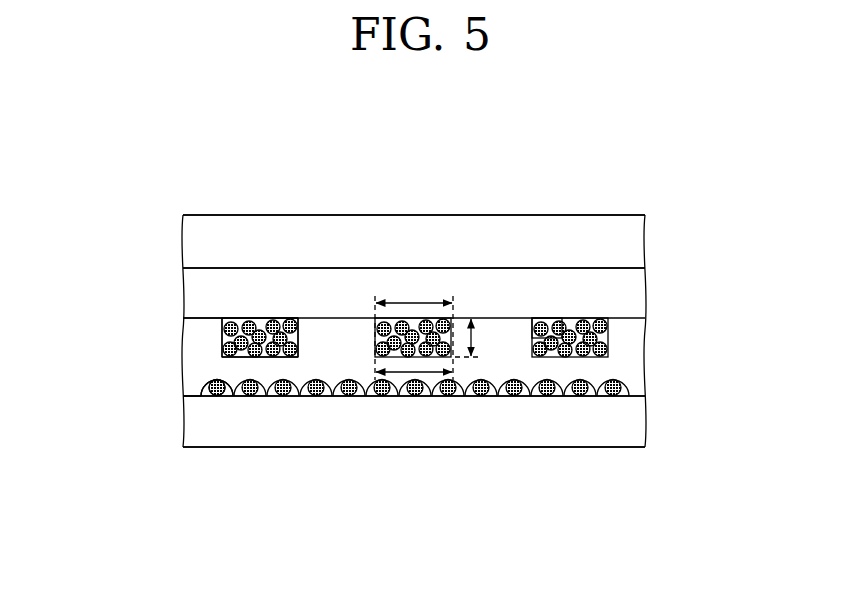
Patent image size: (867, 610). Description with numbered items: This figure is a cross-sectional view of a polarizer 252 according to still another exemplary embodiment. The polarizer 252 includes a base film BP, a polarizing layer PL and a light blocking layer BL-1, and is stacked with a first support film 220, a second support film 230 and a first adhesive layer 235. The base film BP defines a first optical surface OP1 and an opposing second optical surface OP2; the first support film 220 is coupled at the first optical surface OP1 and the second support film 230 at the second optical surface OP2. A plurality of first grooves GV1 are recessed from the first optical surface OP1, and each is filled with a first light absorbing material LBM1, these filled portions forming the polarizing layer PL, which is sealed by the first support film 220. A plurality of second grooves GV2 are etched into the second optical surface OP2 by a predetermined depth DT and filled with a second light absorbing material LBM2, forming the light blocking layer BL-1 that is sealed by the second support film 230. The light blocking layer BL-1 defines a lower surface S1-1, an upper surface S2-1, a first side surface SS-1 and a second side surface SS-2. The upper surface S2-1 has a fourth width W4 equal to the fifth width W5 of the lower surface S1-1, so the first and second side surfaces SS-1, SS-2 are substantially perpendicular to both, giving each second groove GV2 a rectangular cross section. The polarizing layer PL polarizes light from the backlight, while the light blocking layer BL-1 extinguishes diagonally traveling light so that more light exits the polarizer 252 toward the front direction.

The polarizer 252 is at (616, 150).
The first adhesive layer 235 is at (637, 243).
The second support film 230 is at (637, 291).
The first support film 220 is at (638, 420).
The base film BP is at (638, 378).
The light blocking layer BL-1 is at (511, 343).
The second light absorbing material LBM2 is at (603, 325).
The first light absorbing material LBM1 is at (578, 397).
The polarizing layer PL is at (428, 474).
The first groove GV1 is at (219, 384).
The second groove GV2 is at (549, 326).
The second side surface SS-2 is at (298, 327).
The upper surface S2-1 is at (236, 318).
The second optical surface OP2 is at (198, 318).
The first side surface SS-1 is at (222, 336).
The lower surface S1-1 is at (245, 357).
The first optical surface OP1 is at (197, 396).
The fourth width W4 is at (414, 329).
The fifth width W5 is at (399, 368).
The predetermined depth DT is at (481, 338).